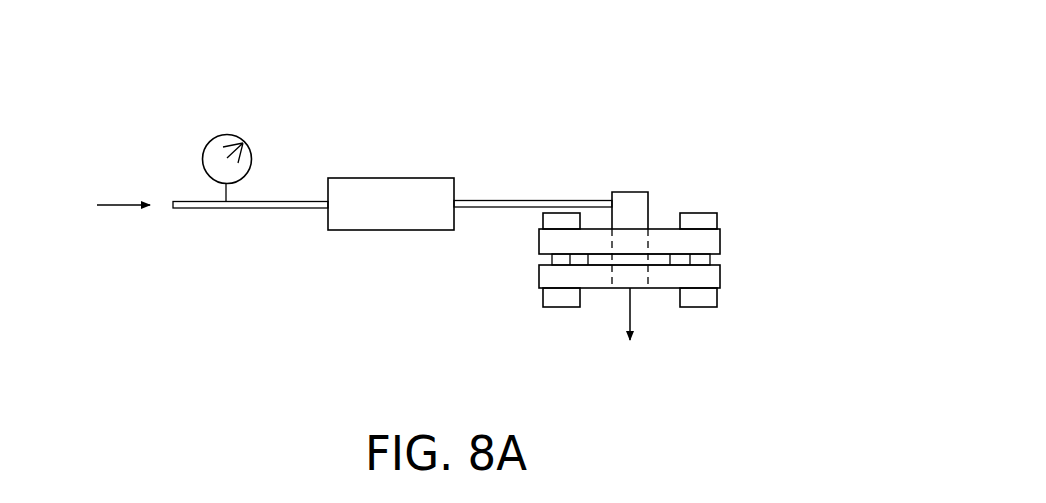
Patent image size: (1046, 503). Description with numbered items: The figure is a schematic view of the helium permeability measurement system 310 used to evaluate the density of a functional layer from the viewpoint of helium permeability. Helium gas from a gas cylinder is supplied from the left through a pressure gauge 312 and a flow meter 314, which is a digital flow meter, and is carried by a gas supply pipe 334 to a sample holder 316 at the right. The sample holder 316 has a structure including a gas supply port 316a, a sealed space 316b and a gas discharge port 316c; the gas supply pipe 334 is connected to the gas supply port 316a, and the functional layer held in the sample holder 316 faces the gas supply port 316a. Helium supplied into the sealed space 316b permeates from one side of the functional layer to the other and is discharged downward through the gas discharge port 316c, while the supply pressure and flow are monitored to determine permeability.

The helium permeability measurement system 310 is at (670, 85).
The pressure gauge 312 is at (215, 136).
The flow meter 314 is at (397, 198).
The gas supply pipe 334 is at (502, 198).
The sample holder 316 is at (698, 170).
The gas supply port 316a is at (648, 242).
The sealed space 316b is at (637, 261).
The gas discharge port 316c is at (648, 278).